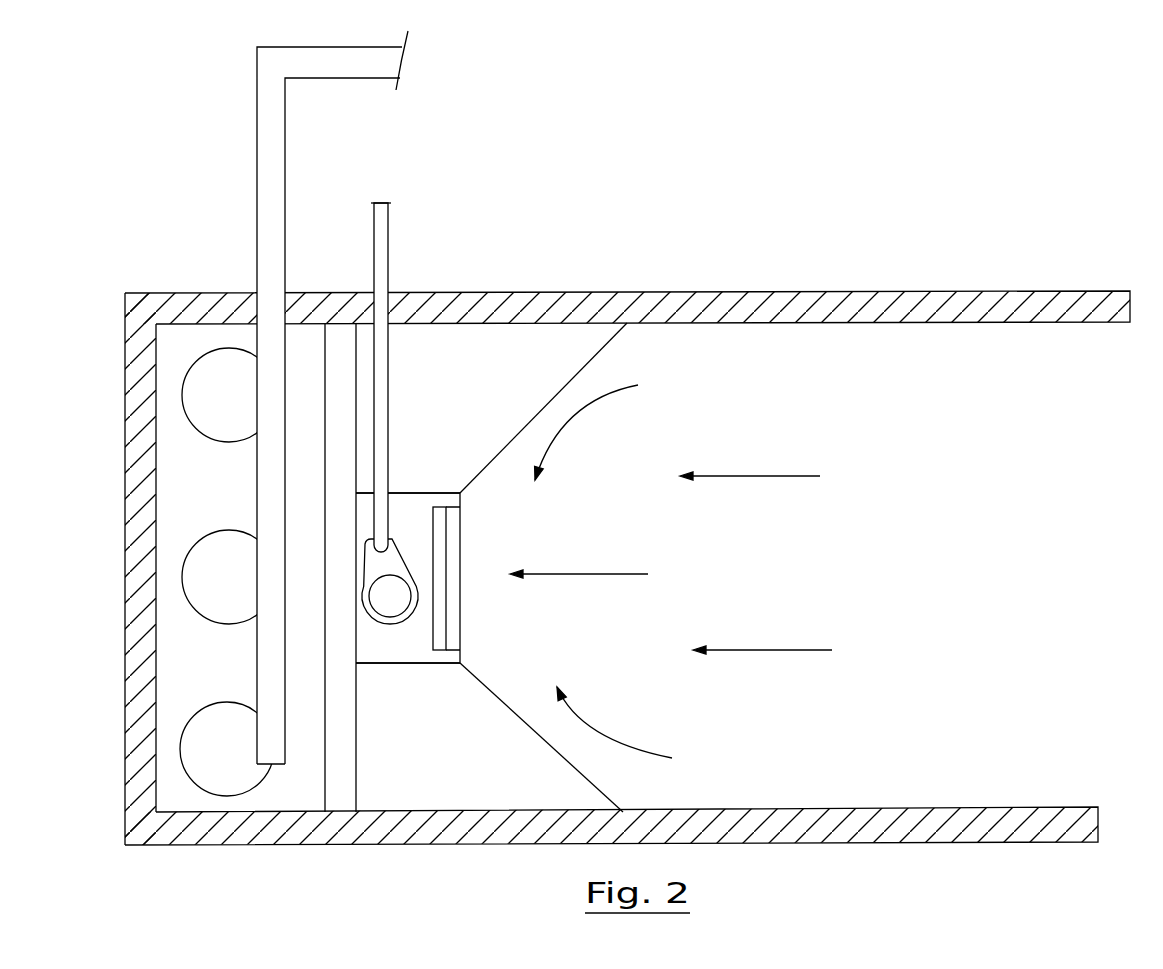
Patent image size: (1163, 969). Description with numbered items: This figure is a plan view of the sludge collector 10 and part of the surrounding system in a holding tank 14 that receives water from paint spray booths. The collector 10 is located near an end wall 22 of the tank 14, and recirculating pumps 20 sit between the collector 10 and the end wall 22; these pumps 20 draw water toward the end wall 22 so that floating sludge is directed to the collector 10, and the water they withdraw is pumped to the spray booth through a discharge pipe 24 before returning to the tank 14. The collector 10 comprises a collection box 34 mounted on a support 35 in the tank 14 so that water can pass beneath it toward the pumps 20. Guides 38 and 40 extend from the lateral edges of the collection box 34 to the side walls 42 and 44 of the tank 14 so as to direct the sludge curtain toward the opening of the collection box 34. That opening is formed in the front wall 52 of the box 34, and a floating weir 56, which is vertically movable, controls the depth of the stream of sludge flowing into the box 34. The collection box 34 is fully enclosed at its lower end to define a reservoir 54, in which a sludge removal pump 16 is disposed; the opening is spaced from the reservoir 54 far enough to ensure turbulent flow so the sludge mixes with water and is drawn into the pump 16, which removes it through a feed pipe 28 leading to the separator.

The sludge collector 10 is at (452, 487).
The holding tank 14 is at (897, 285).
The sludge removal pump 16 is at (382, 623).
The recirculating pump 20 is at (182, 395).
The end wall 22 is at (125, 462).
The discharge pipe 24 is at (257, 250).
The feed pipe 28 is at (390, 230).
The collection box 34 is at (440, 665).
The support 35 is at (357, 765).
The guide 38 is at (613, 798).
The guide 40 is at (615, 338).
The side wall 42 is at (828, 322).
The side wall 44 is at (917, 808).
The front wall 52 is at (460, 502).
The reservoir 54 is at (424, 527).
The floating weir 56 is at (452, 560).